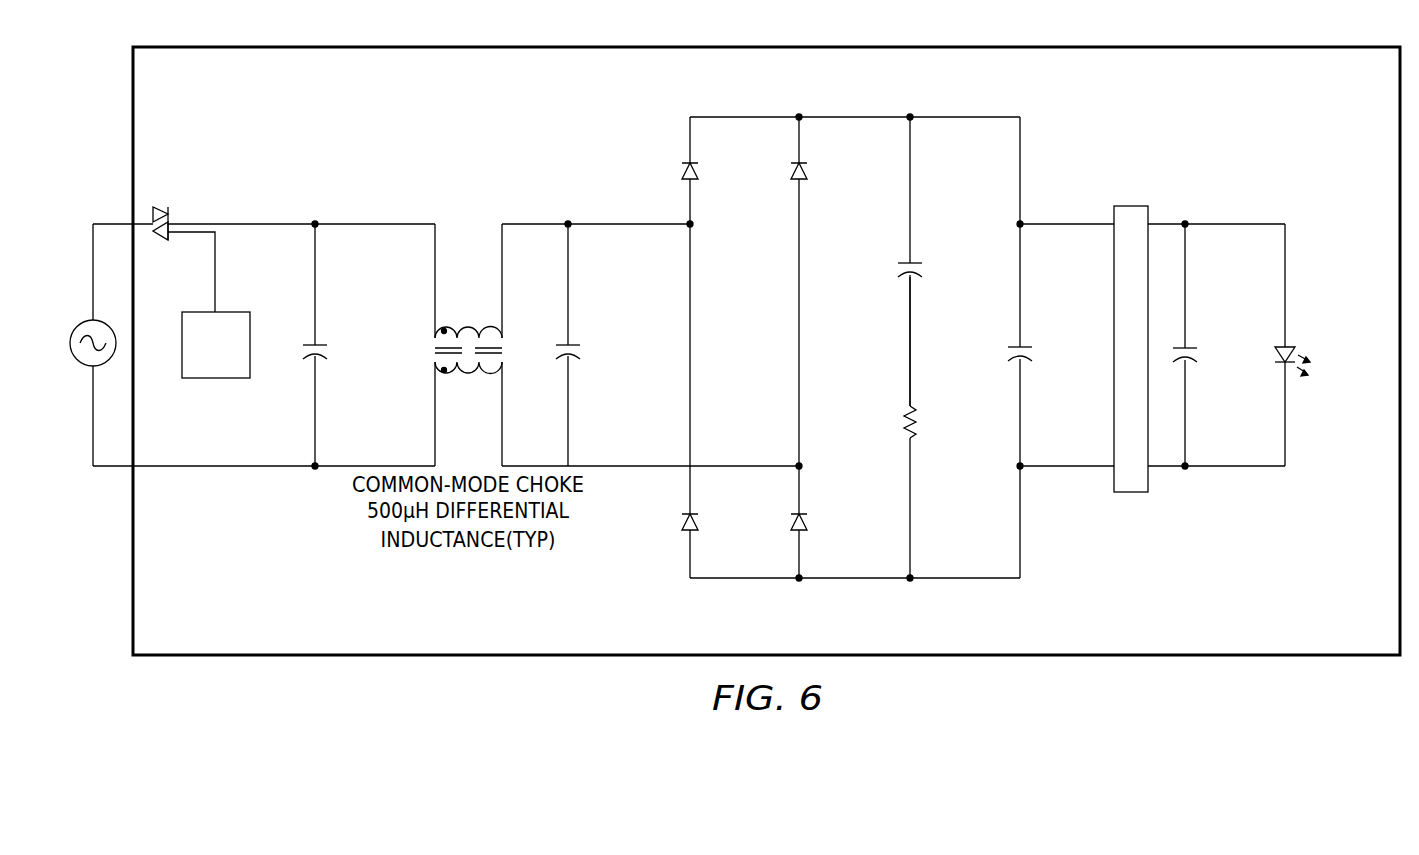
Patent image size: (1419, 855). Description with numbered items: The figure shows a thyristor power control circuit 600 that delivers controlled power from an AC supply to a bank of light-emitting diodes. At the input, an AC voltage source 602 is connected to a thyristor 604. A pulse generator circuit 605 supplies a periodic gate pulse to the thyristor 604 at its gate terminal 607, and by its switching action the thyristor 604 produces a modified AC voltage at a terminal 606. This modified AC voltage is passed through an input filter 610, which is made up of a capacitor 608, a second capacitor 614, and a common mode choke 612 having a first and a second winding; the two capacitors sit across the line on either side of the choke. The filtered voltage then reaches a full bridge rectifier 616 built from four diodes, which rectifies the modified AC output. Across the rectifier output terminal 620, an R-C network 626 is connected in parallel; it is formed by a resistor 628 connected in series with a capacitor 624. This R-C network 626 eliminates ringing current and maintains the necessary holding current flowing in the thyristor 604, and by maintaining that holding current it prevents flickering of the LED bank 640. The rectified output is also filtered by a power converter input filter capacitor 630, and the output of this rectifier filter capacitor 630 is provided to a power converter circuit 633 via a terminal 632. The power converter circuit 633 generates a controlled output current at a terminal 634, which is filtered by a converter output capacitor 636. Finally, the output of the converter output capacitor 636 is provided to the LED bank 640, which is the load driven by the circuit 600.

The thyristor power control circuit 600 is at (1077, 535).
The AC voltage source 602 is at (90, 322).
The thyristor 604 is at (163, 205).
The pulse generator circuit 605 is at (216, 345).
The terminal 606 is at (318, 218).
The gate terminal 607 is at (215, 283).
The capacitor 608 is at (310, 342).
The input filter 610 is at (473, 377).
The common mode choke 612 is at (490, 330).
The capacitor 614 is at (575, 343).
The full bridge rectifier 616 is at (737, 115).
The rectifier output terminal 620 is at (855, 117).
The capacitor 624 is at (910, 262).
The R-C network 626 is at (910, 338).
The resistor 628 is at (902, 422).
The power converter input filter capacitor 630 is at (1018, 348).
The terminal 632 is at (965, 117).
The power converter circuit 633 is at (1130, 205).
The terminal 634 is at (1187, 225).
The converter output capacitor 636 is at (1187, 348).
The LED bank 640 is at (1290, 347).